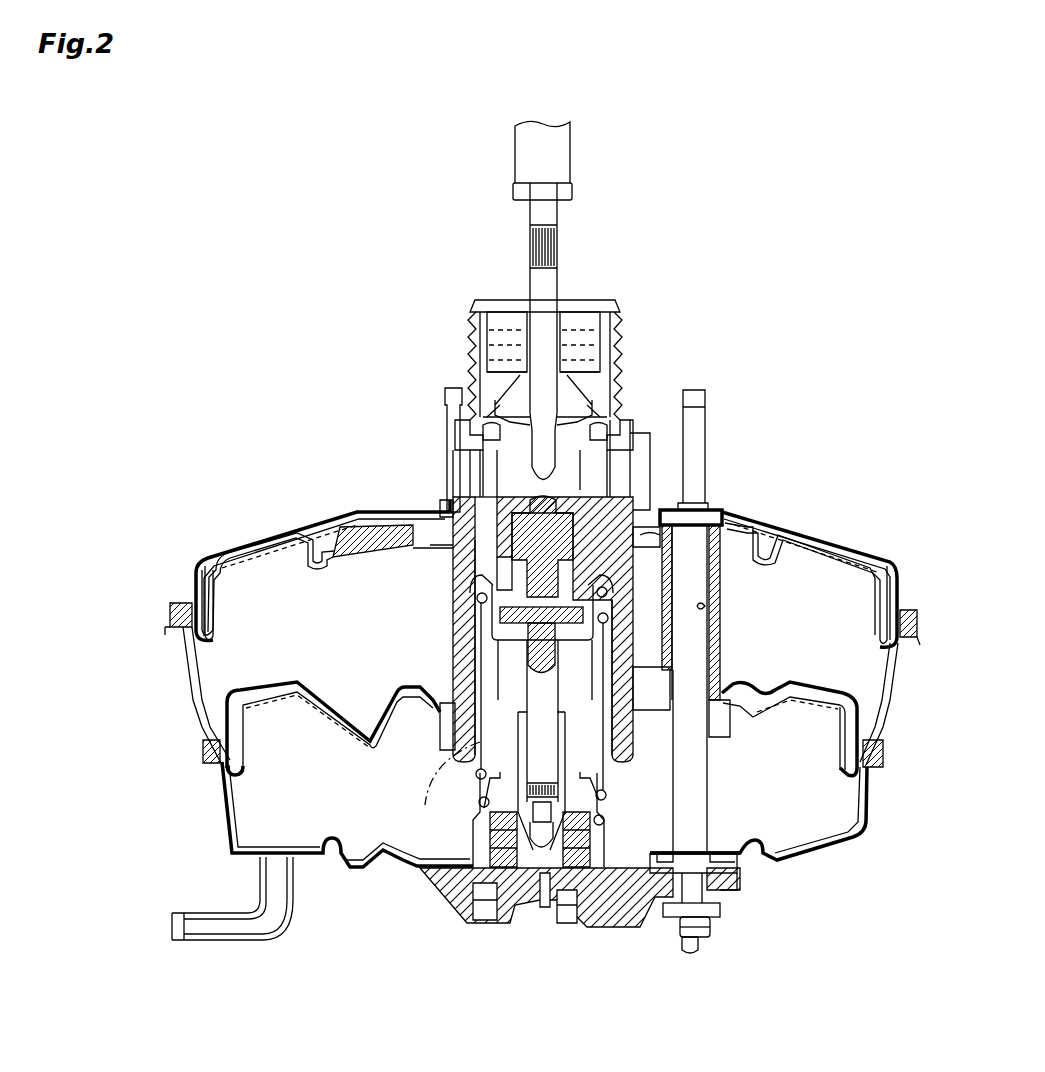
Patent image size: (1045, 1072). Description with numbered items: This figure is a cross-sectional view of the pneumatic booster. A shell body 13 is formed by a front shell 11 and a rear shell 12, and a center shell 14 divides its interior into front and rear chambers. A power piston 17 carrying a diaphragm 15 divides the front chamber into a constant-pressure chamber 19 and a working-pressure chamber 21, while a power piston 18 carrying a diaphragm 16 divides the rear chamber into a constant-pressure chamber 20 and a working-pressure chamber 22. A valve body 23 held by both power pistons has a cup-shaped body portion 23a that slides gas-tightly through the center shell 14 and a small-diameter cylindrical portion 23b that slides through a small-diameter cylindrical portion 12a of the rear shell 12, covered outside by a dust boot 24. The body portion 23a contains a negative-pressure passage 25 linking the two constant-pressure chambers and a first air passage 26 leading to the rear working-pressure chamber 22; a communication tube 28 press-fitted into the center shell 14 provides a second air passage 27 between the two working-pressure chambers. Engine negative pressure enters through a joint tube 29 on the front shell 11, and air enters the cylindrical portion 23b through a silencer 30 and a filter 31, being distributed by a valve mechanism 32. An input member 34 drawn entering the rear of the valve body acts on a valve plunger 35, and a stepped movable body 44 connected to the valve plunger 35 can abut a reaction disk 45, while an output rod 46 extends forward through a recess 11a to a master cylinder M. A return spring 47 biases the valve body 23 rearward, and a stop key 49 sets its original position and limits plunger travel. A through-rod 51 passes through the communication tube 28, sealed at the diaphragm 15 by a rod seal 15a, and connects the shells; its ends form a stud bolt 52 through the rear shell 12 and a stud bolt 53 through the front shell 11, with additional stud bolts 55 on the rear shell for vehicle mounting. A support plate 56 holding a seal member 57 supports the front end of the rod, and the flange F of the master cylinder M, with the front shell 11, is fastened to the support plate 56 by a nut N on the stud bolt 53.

The front shell 11 is at (852, 893).
The recess 11a is at (472, 970).
The rear shell 12 is at (828, 537).
The small-diameter cylindrical portion of the rear shell 12a is at (455, 475).
The shell body 13 is at (920, 843).
The center shell 14 is at (297, 680).
The diaphragm 15 is at (277, 780).
The rod seal 15a is at (760, 740).
The diaphragm 16 is at (247, 630).
The power piston 17 is at (303, 760).
The power piston 18 is at (327, 627).
The constant-pressure chamber 19 is at (245, 837).
The constant-pressure chamber 20 is at (160, 693).
The working-pressure chamber 21 is at (160, 787).
The working-pressure chamber 22 is at (198, 592).
The valve body 23 is at (343, 900).
The cup-shaped body portion 23a is at (453, 643).
The small-diameter cylindrical portion 23b is at (472, 370).
The dust boot 24 is at (439, 347).
The negative-pressure passage 25 is at (455, 548).
The first air passage 26 is at (660, 450).
The second air passage 27 is at (757, 607).
The communication tube 28 is at (760, 653).
The joint tube 29 is at (250, 987).
The silencer 30 is at (515, 320).
The filter 31 is at (655, 315).
The valve mechanism 32 is at (490, 428).
The input rod 34 is at (540, 245).
The valve plunger 35 is at (510, 510).
The stepped movable body 44 is at (587, 690).
The reaction disk 45 is at (500, 693).
The output rod 46 is at (640, 780).
The return spring 47 is at (437, 810).
The stop key 49 is at (733, 463).
The through-rod 51 is at (757, 790).
The stud bolt 52 is at (693, 395).
The stud bolt 53 is at (677, 1010).
The stud bolt 55 is at (445, 395).
The support plate 56 is at (787, 907).
The seal member 57 is at (633, 957).
The flange F is at (777, 943).
The master cylinder M is at (530, 980).
The nut N is at (723, 977).